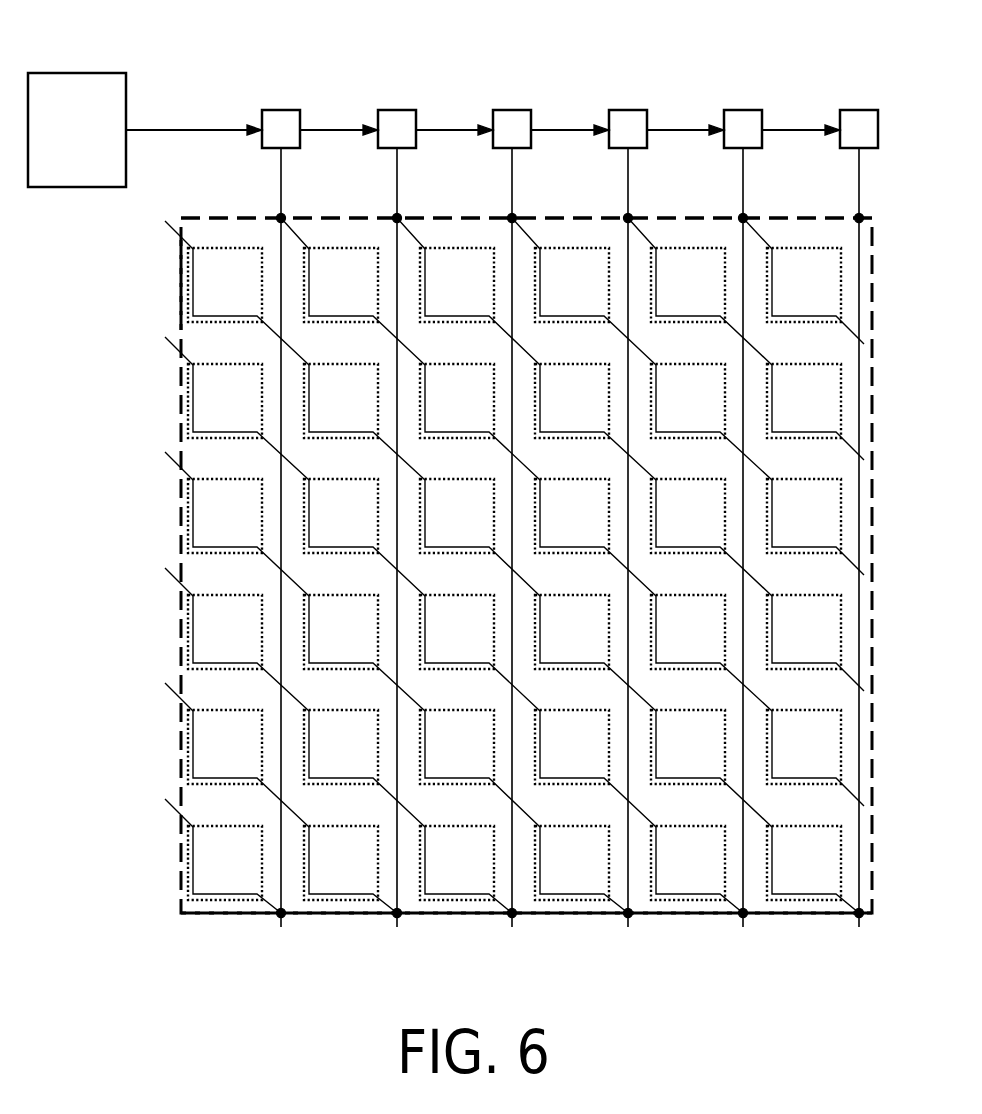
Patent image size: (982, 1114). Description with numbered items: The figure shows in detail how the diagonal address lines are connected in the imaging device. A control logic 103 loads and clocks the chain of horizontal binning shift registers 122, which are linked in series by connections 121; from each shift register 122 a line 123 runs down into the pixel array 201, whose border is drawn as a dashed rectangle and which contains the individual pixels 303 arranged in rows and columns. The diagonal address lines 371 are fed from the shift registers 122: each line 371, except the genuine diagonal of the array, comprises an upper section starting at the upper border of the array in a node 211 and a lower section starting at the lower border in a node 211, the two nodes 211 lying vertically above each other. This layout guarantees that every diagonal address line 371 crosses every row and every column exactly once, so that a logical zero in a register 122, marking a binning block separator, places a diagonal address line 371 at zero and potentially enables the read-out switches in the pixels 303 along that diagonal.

The control logic 103 is at (78, 73).
The connection line 121 is at (185, 128).
The horizontal binning shift register 122 is at (279, 110).
The column conductor line 123 is at (283, 176).
The detector array 201 is at (181, 886).
The node 211 is at (833, 940).
The pixel 303 is at (183, 284).
The diagonal address line 371 is at (178, 238).